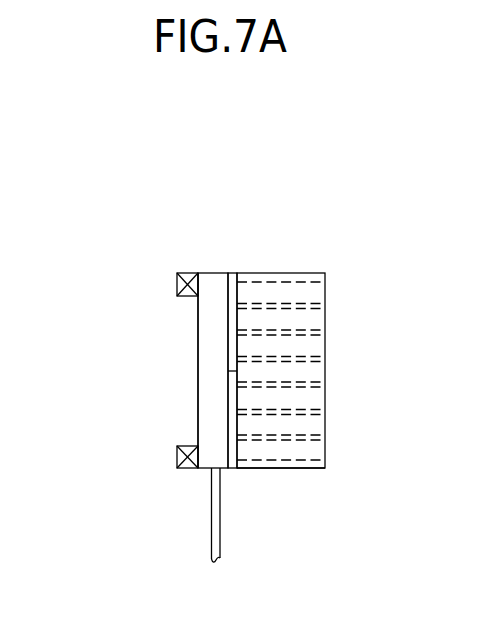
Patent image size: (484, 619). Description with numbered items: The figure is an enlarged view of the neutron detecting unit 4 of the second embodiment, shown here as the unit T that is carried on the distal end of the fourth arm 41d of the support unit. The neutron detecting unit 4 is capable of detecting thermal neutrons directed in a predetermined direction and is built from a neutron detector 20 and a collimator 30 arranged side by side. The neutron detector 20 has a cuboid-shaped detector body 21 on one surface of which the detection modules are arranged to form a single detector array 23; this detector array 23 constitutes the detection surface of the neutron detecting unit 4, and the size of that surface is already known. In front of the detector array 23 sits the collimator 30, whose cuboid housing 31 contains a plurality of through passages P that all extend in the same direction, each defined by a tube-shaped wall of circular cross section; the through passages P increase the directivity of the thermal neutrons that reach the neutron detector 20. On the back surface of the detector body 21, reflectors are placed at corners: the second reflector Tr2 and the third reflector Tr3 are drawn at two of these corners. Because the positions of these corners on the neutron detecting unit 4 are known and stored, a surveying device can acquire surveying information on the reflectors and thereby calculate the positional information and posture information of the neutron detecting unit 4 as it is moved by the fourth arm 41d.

The liquid ejecting head unit T is at (96, 259).
The neutron detecting unit 4 is at (292, 198).
The neutron detector 20 is at (214, 264).
The detector body 21 is at (210, 378).
The detector array 23 is at (233, 470).
The collimator 30 is at (273, 264).
The housing 31 is at (263, 470).
The through passages P is at (283, 333).
The second reflector Tr2 is at (183, 273).
The third reflector Tr3 is at (178, 448).
The fourth arm 41d is at (211, 538).